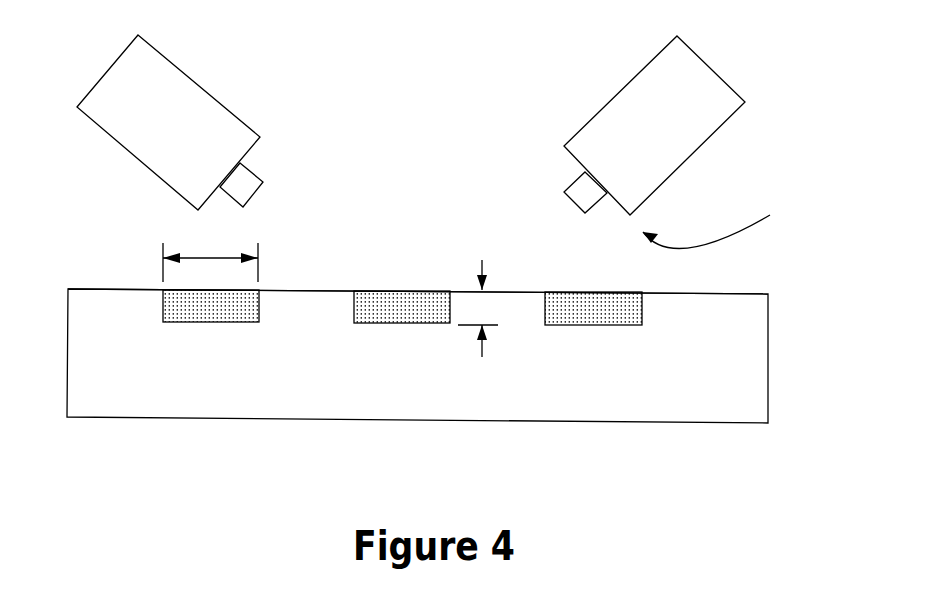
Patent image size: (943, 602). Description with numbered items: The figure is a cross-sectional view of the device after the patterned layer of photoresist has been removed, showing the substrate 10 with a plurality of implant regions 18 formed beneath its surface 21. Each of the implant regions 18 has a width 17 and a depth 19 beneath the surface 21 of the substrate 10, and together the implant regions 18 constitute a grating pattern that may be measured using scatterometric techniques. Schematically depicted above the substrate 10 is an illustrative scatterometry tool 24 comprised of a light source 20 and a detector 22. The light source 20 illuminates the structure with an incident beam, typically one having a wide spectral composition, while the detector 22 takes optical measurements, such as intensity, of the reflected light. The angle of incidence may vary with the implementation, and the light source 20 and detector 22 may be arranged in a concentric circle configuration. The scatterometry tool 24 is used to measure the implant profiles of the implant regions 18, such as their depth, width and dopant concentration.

The substrate 10 is at (720, 392).
The width 17 is at (212, 258).
The implant regions 18 is at (212, 307).
The depth 19 is at (482, 260).
The light source 20 is at (180, 164).
The surface 21 is at (717, 294).
The detector 22 is at (658, 153).
The scatterometry tool 24 is at (725, 218).